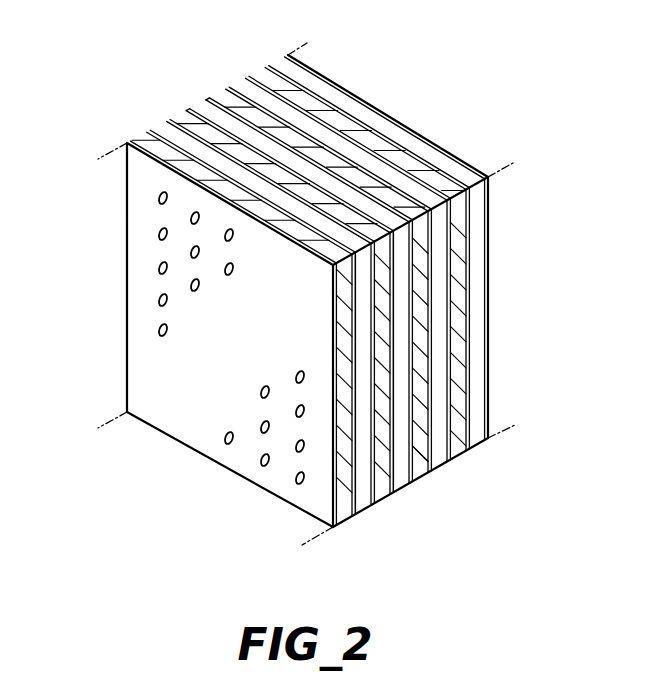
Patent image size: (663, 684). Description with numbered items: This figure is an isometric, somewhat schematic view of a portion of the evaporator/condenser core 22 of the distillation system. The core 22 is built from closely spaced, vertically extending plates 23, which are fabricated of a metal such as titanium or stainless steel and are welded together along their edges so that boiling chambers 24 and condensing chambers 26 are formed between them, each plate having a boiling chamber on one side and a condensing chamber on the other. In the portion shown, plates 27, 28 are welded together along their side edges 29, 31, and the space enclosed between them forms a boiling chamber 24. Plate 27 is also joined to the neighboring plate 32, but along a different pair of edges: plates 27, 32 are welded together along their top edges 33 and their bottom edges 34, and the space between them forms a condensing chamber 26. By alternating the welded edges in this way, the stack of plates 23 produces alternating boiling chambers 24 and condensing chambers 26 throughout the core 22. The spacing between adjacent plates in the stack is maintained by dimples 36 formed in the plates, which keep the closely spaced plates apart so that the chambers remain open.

The core 22 is at (115, 318).
The plates 23 is at (488, 262).
The boiling chamber 24 is at (330, 167).
The condensing chamber 26 is at (400, 432).
The plate 27 is at (222, 92).
The plate 28 is at (210, 99).
The side edge 29 is at (418, 467).
The side edge 31 is at (212, 96).
The plate 32 is at (307, 67).
The top edge 33 is at (420, 193).
The bottom edge 34 is at (440, 470).
The dimples 36 is at (157, 268).